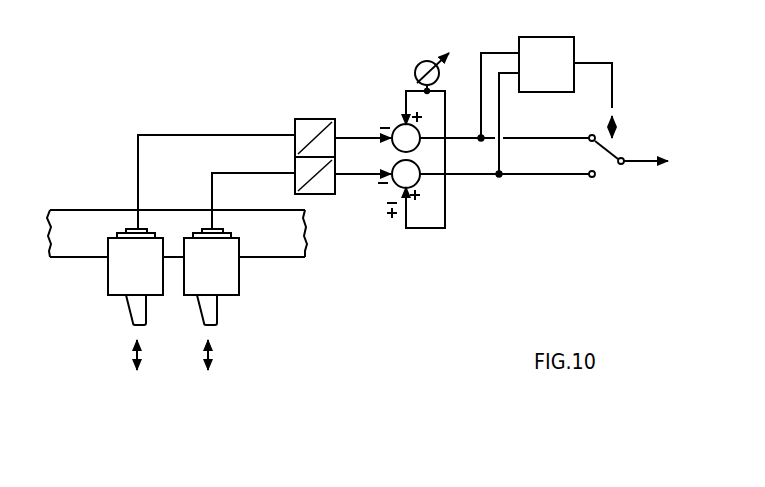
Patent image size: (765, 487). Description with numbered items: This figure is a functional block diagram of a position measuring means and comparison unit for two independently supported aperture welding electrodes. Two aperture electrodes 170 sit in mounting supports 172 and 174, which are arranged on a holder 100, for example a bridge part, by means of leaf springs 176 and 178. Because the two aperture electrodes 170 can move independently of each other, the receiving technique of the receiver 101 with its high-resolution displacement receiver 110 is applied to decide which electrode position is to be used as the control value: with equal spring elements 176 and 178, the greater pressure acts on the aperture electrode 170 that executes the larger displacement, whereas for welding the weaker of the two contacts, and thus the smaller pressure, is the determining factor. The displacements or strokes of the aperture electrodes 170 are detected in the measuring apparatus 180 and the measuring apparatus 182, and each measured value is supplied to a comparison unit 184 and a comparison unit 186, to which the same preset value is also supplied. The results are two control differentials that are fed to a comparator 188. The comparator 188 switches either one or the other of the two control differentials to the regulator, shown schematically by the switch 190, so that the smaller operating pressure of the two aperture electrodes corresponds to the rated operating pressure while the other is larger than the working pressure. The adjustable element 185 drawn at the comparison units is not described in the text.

The holder 100 is at (68, 245).
The receiver 101 is at (189, 127).
The displacement receiver 110 is at (301, 150).
The aperture electrode 170 is at (138, 312).
The mounting support 172 is at (119, 278).
The mounting support 174 is at (229, 281).
The leaf spring 176 is at (122, 233).
The leaf spring 178 is at (225, 233).
The measuring apparatus 180 is at (295, 118).
The measuring apparatus 182 is at (323, 195).
The comparison unit 184 is at (422, 184).
The adjustable reference source 185 is at (425, 61).
The comparison unit 186 is at (401, 122).
The comparator 188 is at (575, 47).
The switch 190 is at (606, 168).